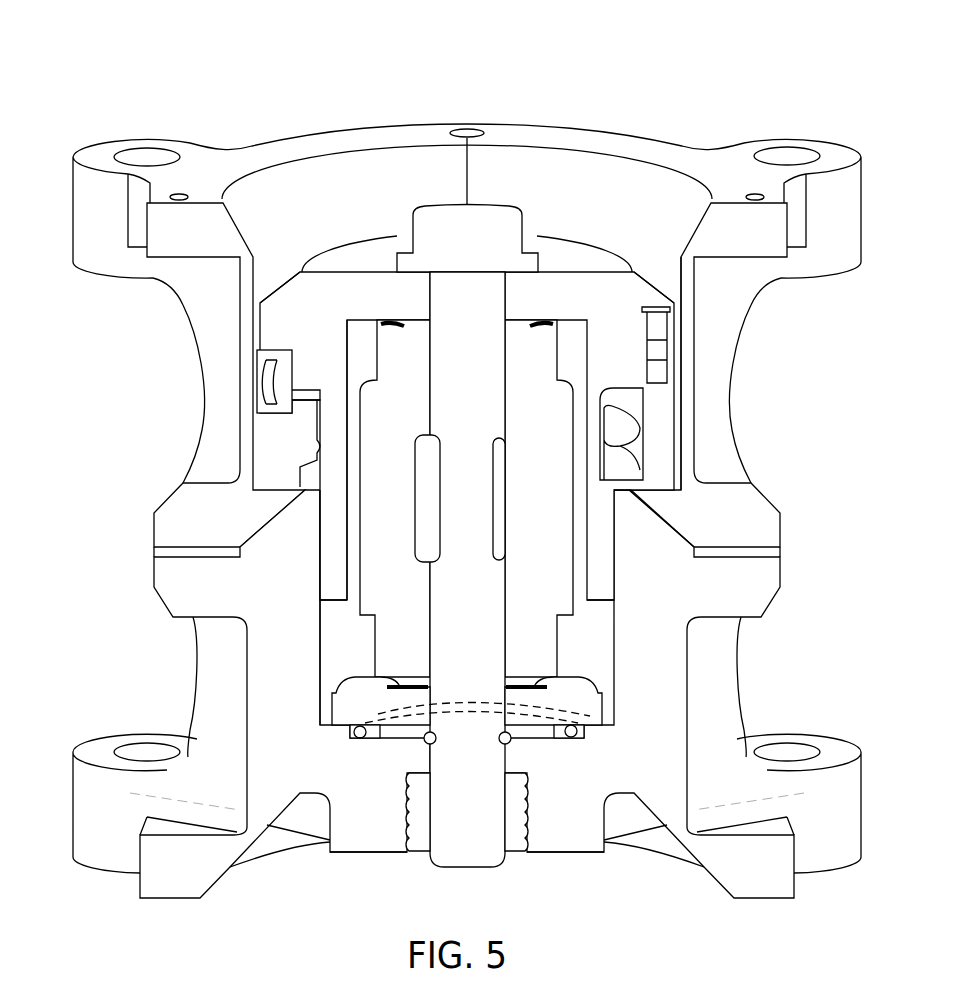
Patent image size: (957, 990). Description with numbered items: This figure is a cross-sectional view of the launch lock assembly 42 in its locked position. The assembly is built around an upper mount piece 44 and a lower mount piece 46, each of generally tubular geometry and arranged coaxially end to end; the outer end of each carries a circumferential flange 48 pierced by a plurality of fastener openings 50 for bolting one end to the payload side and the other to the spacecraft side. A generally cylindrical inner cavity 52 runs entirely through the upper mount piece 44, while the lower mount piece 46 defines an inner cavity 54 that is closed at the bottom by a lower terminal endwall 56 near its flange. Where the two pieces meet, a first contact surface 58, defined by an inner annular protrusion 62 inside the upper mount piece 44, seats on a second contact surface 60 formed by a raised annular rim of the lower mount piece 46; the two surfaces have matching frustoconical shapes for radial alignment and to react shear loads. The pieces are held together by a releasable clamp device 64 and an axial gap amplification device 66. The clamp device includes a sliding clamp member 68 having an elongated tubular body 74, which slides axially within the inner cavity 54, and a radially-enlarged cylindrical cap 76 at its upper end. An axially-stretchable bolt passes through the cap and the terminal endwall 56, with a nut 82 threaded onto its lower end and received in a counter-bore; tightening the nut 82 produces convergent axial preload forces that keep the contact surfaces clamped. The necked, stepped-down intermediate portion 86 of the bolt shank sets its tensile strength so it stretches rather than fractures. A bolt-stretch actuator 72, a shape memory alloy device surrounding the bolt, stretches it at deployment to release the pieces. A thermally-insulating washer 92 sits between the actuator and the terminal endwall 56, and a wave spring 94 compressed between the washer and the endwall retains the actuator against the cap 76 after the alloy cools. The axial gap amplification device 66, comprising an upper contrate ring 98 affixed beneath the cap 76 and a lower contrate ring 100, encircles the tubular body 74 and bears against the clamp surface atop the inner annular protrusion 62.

The launch lock assembly 42 is at (445, 453).
The upper mount piece 44 is at (730, 370).
The lower mount piece 46 is at (730, 665).
The circumferential flange 48 is at (354, 132).
The fastener openings 50 is at (138, 150).
The inner cavity 52 is at (300, 452).
The inner cavity 54 is at (332, 654).
The lower terminal endwall 56 is at (376, 848).
The first contact surface 58 is at (664, 545).
The second contact surface 60 is at (690, 538).
The inner annular protrusion 62 is at (672, 436).
The releasable clamp device 64 is at (536, 205).
The axial gap amplification device 66 is at (260, 369).
The sliding clamp member 68 is at (296, 271).
The bolt-stretch actuator 72 is at (549, 357).
The tubular body 74 is at (332, 556).
The cylindrical cap 76 is at (360, 248).
The nut 82 is at (443, 205).
The stepped-down intermediate portion 86 is at (415, 497).
The thermally-insulating washer 92 is at (330, 703).
The wave spring 94 is at (572, 740).
The upper contrate ring 98 is at (660, 356).
The lower contrate ring 100 is at (662, 400).